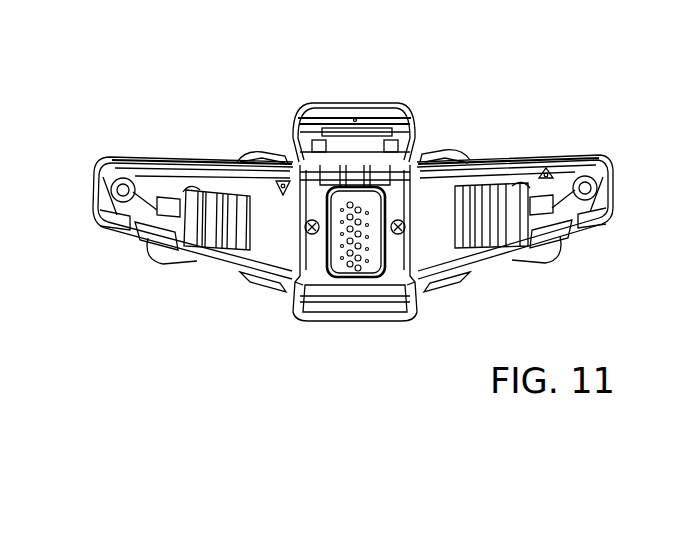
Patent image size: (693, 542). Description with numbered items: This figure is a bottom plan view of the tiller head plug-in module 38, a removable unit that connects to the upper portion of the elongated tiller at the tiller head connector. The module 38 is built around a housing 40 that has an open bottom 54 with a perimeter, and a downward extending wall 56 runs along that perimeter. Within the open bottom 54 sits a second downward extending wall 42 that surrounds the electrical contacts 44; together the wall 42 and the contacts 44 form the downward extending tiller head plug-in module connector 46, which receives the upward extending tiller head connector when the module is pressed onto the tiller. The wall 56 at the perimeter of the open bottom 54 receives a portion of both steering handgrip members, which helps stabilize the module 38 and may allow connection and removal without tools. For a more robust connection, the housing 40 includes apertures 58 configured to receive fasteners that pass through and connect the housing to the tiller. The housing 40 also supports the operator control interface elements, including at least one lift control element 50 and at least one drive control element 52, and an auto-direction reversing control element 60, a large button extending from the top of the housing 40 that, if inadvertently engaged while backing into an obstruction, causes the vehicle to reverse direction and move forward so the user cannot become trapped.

The tiller head plug-in module 38 is at (537, 68).
The housing 40 is at (192, 160).
The downward extending wall 42 is at (313, 167).
The electrical contacts 44 is at (358, 265).
The tiller head plug-in module connector 46 is at (391, 183).
The lift control element 50 is at (168, 253).
The drive control element 52 is at (253, 153).
The open bottom 54 is at (547, 176).
The downward extending wall 56 is at (157, 162).
The apertures 58 is at (117, 184).
The auto-direction reversing control element 60 is at (358, 110).